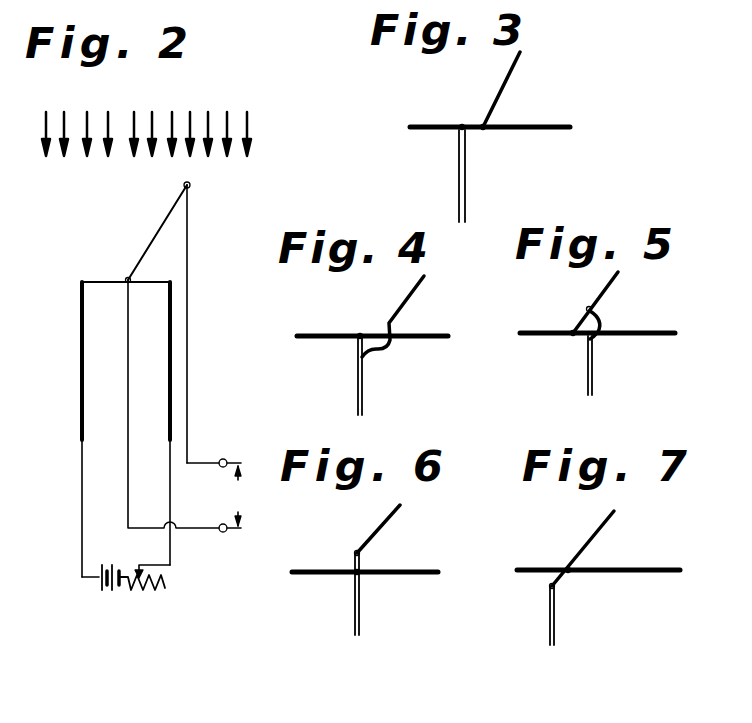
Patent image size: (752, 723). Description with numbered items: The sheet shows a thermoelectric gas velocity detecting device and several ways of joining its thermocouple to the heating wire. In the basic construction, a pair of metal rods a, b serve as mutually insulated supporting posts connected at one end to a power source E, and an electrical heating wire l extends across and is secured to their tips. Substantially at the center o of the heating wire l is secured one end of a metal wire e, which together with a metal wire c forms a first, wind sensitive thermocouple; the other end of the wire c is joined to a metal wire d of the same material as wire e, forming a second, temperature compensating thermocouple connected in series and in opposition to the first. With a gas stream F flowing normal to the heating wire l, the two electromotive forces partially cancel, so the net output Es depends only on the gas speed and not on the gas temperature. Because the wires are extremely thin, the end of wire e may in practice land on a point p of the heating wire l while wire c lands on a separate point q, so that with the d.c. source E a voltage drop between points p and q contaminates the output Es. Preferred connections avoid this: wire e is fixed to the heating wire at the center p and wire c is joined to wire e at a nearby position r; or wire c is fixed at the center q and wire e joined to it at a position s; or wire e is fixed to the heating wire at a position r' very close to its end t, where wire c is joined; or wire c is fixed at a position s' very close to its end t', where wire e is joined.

In FIG. 2, the metal rod a is at (84, 372).
In FIG. 2, the metal rod b is at (168, 355).
In FIG. 2, the metal wire c is at (148, 244).
In FIG. 3, the metal wire c is at (502, 90).
In FIG. 4, the metal wire c is at (392, 308).
In FIG. 5, the metal wire c is at (605, 288).
In FIG. 6, the metal wire c is at (399, 512).
In FIG. 7, the metal wire c is at (592, 535).
In FIG. 2, the metal wire d is at (188, 384).
In FIG. 2, the metal wire e is at (130, 488).
In FIG. 3, the metal wire e is at (466, 193).
In FIG. 4, the metal wire e is at (363, 384).
In FIG. 5, the metal wire e is at (593, 381).
In FIG. 6, the metal wire e is at (361, 612).
In FIG. 7, the metal wire e is at (550, 629).
In FIG. 2, the electrical heating wire l is at (121, 281).
In FIG. 3, the electrical heating wire l is at (520, 131).
In FIG. 4, the electrical heating wire l is at (430, 333).
In FIG. 5, the electrical heating wire l is at (650, 336).
In FIG. 6, the electrical heating wire l is at (420, 570).
In FIG. 7, the electrical heating wire l is at (637, 568).
In FIG. 2, the center point o is at (132, 278).
In FIG. 3, the point p is at (461, 124).
In FIG. 4, the point p is at (359, 333).
In FIG. 3, the point q is at (483, 131).
In FIG. 5, the point q is at (573, 337).
In FIG. 4, the position r is at (345, 364).
In FIG. 5, the position s is at (581, 308).
In FIG. 6, the end t is at (344, 540).
In FIG. 6, the position r' is at (343, 588).
In FIG. 7, the position s' is at (582, 587).
In FIG. 7, the end t' is at (537, 593).
In FIG. 2, the gas stream F is at (146, 118).
In FIG. 2, the power source E is at (126, 601).
In FIG. 2, the net electromotive force output Es is at (222, 495).